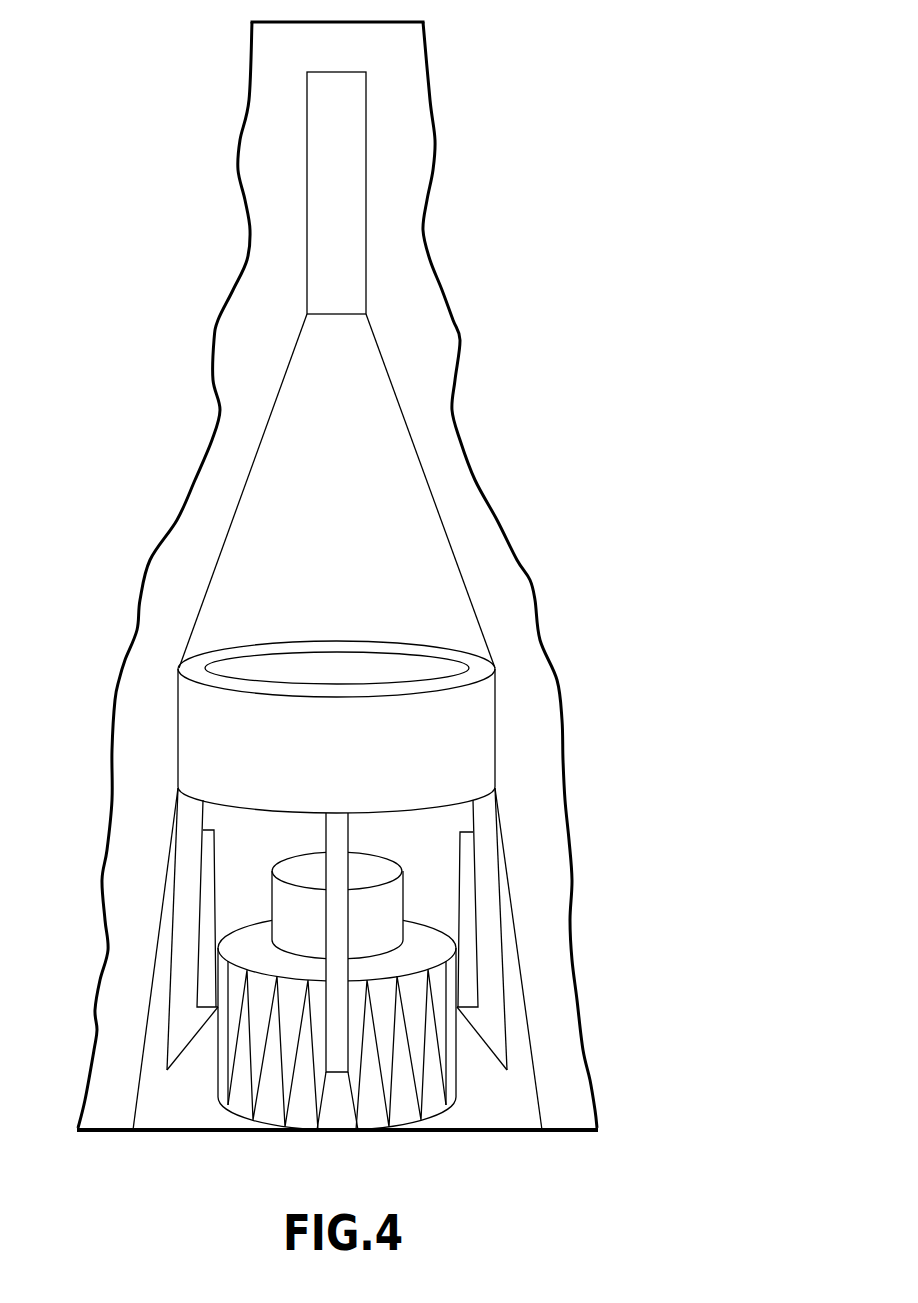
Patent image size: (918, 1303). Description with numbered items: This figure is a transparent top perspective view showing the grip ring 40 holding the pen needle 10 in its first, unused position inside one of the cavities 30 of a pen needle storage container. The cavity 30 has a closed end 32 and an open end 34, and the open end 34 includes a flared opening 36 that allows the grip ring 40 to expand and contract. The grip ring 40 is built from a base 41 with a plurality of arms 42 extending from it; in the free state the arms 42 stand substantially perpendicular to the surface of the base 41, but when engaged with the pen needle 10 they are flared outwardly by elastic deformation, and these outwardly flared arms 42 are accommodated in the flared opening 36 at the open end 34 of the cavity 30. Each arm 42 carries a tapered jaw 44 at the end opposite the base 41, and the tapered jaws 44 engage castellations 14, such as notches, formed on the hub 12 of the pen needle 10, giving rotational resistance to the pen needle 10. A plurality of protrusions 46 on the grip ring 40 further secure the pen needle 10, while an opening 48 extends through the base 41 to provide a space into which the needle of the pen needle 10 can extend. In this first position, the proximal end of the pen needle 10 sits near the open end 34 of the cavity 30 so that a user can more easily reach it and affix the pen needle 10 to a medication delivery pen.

The pen needle 10 is at (403, 902).
The hub 12 is at (458, 1062).
The castellations 14 is at (258, 1090).
The cavity 30 is at (343, 433).
The closed end 32 is at (347, 72).
The open end 34 is at (433, 1130).
The flared opening 36 is at (145, 1038).
The grip ring 40 is at (158, 694).
The base 41 is at (452, 740).
The arms 42 is at (173, 928).
The tapered jaw 44 is at (186, 1048).
The protrusion 46 is at (208, 867).
The opening 48 is at (382, 665).